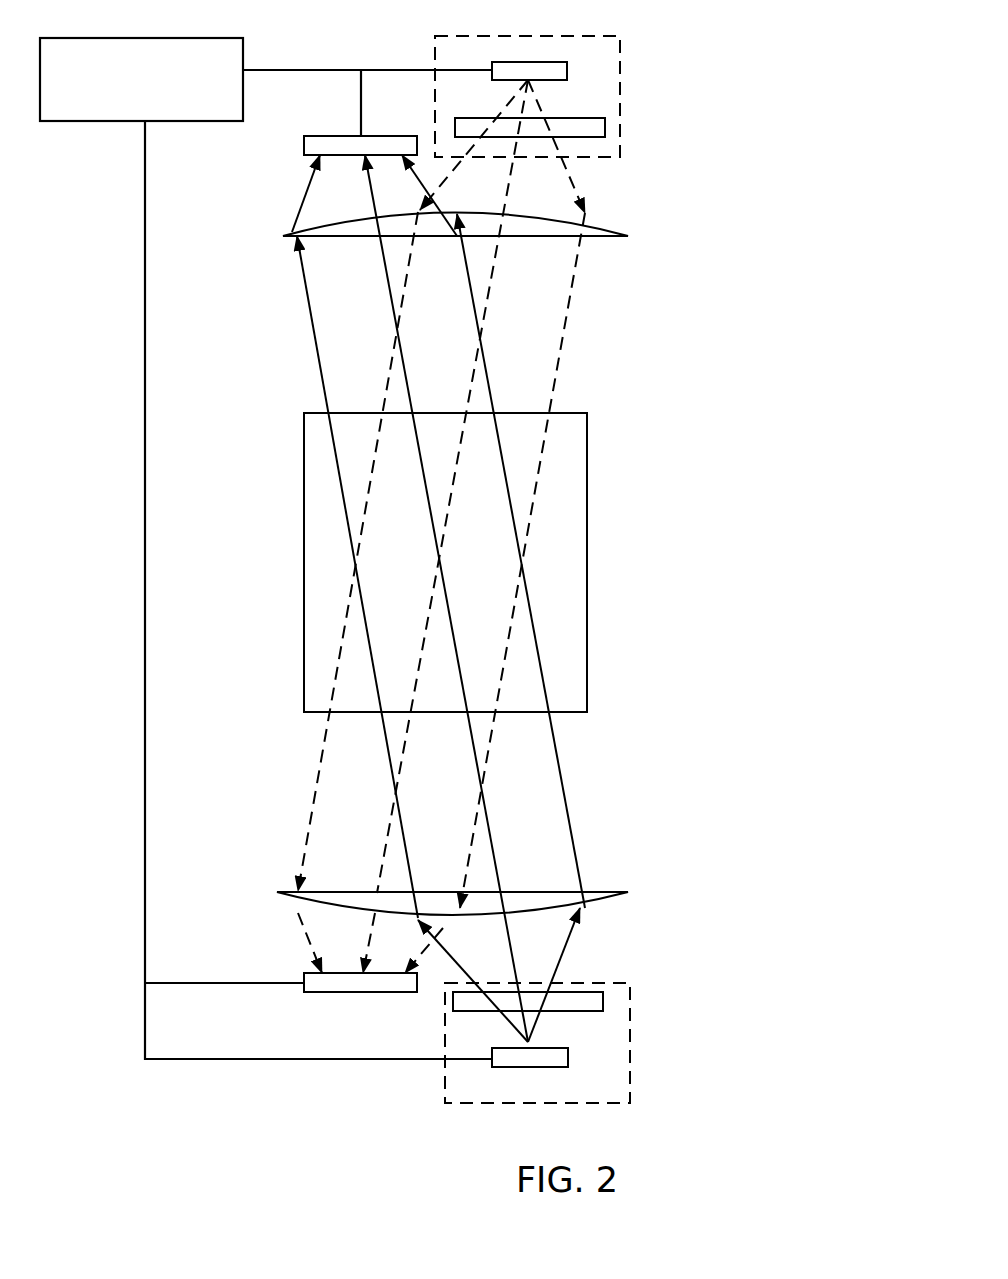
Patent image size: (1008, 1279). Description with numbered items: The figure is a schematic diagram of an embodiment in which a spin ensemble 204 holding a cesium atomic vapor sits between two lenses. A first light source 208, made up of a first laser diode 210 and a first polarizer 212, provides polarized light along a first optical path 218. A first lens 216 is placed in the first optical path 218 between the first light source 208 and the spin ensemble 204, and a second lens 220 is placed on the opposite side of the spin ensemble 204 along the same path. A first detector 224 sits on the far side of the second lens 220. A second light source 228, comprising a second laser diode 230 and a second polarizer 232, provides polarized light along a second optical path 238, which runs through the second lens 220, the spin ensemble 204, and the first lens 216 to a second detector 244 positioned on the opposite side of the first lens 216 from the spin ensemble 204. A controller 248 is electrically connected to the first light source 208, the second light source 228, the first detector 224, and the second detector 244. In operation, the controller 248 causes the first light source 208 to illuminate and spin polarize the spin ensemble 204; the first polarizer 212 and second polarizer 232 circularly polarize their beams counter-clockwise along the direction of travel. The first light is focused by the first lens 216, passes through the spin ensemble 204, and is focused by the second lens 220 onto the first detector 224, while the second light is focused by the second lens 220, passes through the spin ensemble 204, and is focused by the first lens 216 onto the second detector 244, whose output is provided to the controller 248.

The spin ensemble 204 is at (304, 663).
The first light source 208 is at (620, 62).
The first laser diode 210 is at (567, 62).
The first polarizer 212 is at (605, 128).
The first lens 216 is at (283, 236).
The first optical path 218 is at (495, 270).
The second lens 220 is at (277, 892).
The first detector 224 is at (304, 985).
The second light source 228 is at (445, 1082).
The second laser diode 230 is at (568, 1052).
The second polarizer 232 is at (451, 1001).
The second optical path 238 is at (513, 958).
The second detector 244 is at (304, 143).
The controller 248 is at (266, 548).